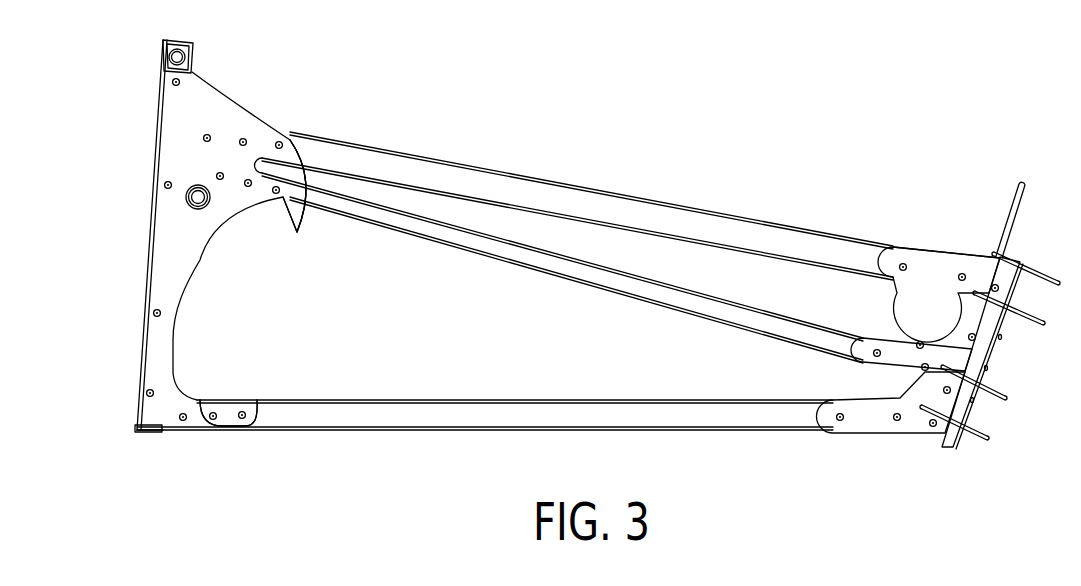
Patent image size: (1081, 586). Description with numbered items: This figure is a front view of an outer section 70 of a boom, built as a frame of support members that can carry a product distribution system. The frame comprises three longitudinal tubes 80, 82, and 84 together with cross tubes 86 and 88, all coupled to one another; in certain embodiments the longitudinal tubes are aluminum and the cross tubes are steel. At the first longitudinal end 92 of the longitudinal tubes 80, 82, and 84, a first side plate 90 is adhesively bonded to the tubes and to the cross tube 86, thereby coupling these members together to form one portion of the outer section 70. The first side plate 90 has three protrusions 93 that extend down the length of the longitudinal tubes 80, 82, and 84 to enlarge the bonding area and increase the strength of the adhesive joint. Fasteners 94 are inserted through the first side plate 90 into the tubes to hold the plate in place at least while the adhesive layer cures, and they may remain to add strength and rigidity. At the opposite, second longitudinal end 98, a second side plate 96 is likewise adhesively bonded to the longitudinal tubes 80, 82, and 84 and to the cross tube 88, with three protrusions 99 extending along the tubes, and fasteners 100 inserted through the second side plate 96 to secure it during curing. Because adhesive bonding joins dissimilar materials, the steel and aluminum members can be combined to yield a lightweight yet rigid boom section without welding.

The outer section 70 is at (791, 99).
The longitudinal tube 80 is at (571, 196).
The longitudinal tube 82 is at (510, 257).
The longitudinal tube 84 is at (457, 410).
The cross tube 86 is at (163, 62).
The cross tube 88 is at (933, 438).
The first side plate 90 is at (170, 130).
The first longitudinal end 92 is at (301, 105).
The protrusions 93 is at (297, 233).
The fasteners 94 is at (180, 82).
The second side plate 96 is at (1003, 258).
The second longitudinal end 98 is at (889, 215).
The protrusions 99 is at (927, 263).
The fasteners 100 is at (878, 350).